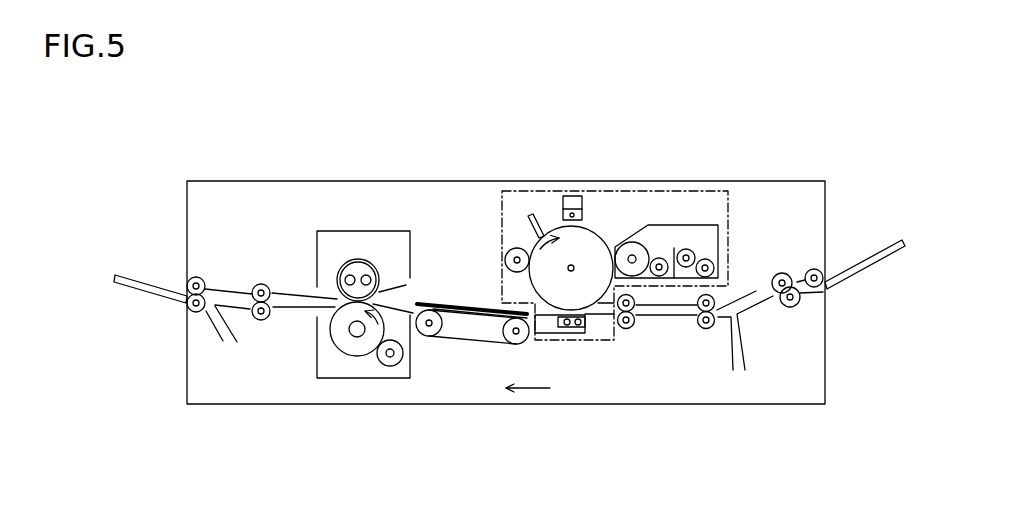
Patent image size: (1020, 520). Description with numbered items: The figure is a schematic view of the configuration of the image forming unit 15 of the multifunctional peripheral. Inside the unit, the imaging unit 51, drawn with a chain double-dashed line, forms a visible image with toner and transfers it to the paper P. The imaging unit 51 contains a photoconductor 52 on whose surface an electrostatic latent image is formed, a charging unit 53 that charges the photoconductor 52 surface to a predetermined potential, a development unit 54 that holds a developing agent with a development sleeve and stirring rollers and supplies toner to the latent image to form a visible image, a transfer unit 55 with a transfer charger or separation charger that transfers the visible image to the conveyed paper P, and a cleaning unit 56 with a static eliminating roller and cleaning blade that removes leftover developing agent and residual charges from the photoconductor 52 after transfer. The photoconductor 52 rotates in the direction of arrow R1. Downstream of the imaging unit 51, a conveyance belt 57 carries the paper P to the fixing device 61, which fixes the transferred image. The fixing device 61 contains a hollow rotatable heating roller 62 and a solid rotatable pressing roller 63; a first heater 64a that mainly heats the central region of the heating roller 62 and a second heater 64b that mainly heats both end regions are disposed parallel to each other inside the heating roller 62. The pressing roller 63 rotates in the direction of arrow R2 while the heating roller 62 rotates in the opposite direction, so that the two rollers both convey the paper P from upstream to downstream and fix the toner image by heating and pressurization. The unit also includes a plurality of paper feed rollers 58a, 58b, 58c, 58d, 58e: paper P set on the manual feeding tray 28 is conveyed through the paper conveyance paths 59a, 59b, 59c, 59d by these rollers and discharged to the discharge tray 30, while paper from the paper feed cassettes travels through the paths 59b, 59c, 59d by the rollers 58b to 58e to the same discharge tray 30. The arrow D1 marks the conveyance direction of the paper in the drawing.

The image forming unit 15 is at (836, 215).
The manual feeding tray 28 is at (849, 289).
The discharge tray 30 is at (157, 300).
The imaging unit 51 is at (650, 190).
The photoconductor 52 is at (600, 250).
The charging unit 53 is at (573, 196).
The development unit 54 is at (670, 212).
The transfer unit 55 is at (593, 331).
The cleaning unit 56 is at (545, 221).
The conveyance belt 57 is at (481, 341).
The paper feed roller 58a is at (803, 311).
The paper feed roller 58b is at (714, 339).
The paper feed roller 58c is at (638, 333).
The paper feed roller 58d is at (270, 329).
The paper feed roller 58e is at (197, 319).
The paper conveyance path 59a is at (762, 313).
The paper conveyance path 59b is at (686, 326).
The paper conveyance path 59c is at (295, 318).
The paper conveyance path 59d is at (242, 318).
The fixing device 61 is at (416, 218).
The heating roller 62 is at (341, 268).
The pressing roller 63 is at (352, 341).
The first heater 64a is at (350, 275).
The second heater 64b is at (367, 275).
The paper P is at (416, 308).
The rotation direction of photoconductor R1 is at (554, 254).
The rotation direction of pressing roller R2 is at (373, 344).
The conveying direction D1 is at (528, 375).